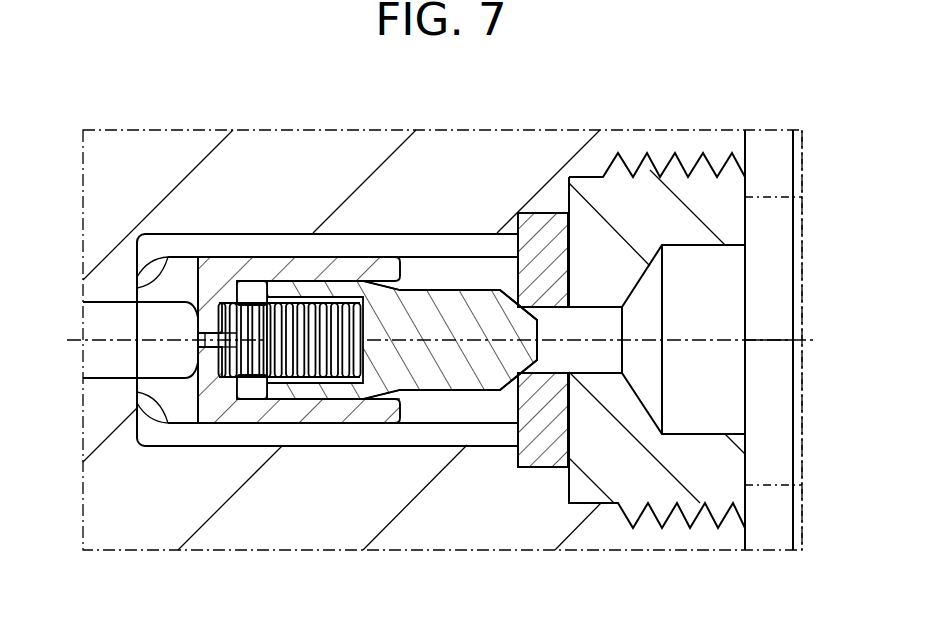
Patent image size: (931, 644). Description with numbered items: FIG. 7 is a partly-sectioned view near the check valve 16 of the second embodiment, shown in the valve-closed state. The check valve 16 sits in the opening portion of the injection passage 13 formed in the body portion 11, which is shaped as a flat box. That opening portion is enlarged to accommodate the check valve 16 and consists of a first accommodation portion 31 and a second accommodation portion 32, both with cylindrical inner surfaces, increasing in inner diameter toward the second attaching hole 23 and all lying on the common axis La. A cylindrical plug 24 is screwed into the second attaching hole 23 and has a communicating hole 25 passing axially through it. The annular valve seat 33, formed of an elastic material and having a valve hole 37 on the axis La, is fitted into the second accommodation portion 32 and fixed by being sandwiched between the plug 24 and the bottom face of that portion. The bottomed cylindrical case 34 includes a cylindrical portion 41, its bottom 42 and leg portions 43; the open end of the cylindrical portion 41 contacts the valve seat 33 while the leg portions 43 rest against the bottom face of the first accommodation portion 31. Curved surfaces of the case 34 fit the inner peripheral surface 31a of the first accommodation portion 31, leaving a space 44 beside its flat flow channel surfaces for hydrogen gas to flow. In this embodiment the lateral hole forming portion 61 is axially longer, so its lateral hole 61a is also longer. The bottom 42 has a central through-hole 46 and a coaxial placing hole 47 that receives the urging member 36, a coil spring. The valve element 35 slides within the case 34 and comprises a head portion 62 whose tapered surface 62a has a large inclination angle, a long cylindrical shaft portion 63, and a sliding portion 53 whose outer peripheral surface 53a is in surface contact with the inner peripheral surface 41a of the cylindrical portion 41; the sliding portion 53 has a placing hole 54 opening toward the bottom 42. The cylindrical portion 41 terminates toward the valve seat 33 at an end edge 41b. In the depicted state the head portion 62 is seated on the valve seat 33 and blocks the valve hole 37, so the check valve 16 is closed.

The check valve 16 is at (77, 127).
The body portion 11 is at (118, 130).
The injection passage 13 is at (108, 380).
The leg portions 43 is at (150, 446).
The inner peripheral surface of the first accommodation portion 31a is at (146, 275).
The first accommodation portion 31 is at (441, 236).
The space 44 is at (293, 248).
The case 34 is at (204, 256).
The valve element 35 is at (377, 275).
The bottom 42 is at (222, 418).
The cylindrical portion 41 is at (292, 422).
The inner peripheral surface of the cylindrical portion 41a is at (372, 422).
The end edge of the cylindrical portion 41b is at (413, 422).
The urging member 36 is at (249, 283).
The placing hole 54 is at (258, 400).
The through-hole 46 is at (204, 333).
The placing hole 47 is at (205, 347).
The sliding portion 53 is at (336, 400).
The outer peripheral surface of the sliding portion 53a is at (372, 300).
The head portion 62 is at (538, 350).
The tapered surface 62a is at (548, 312).
The lateral hole forming portion 61 is at (469, 256).
The lateral hole 61a is at (500, 442).
The shaft portion 63 is at (478, 440).
The second accommodation portion 32 is at (545, 216).
The valve seat 33 is at (525, 232).
The valve hole 37 is at (553, 321).
The second attaching hole 23 is at (590, 182).
The plug 24 is at (703, 190).
The communicating hole 25 is at (710, 247).
The axis La is at (764, 342).